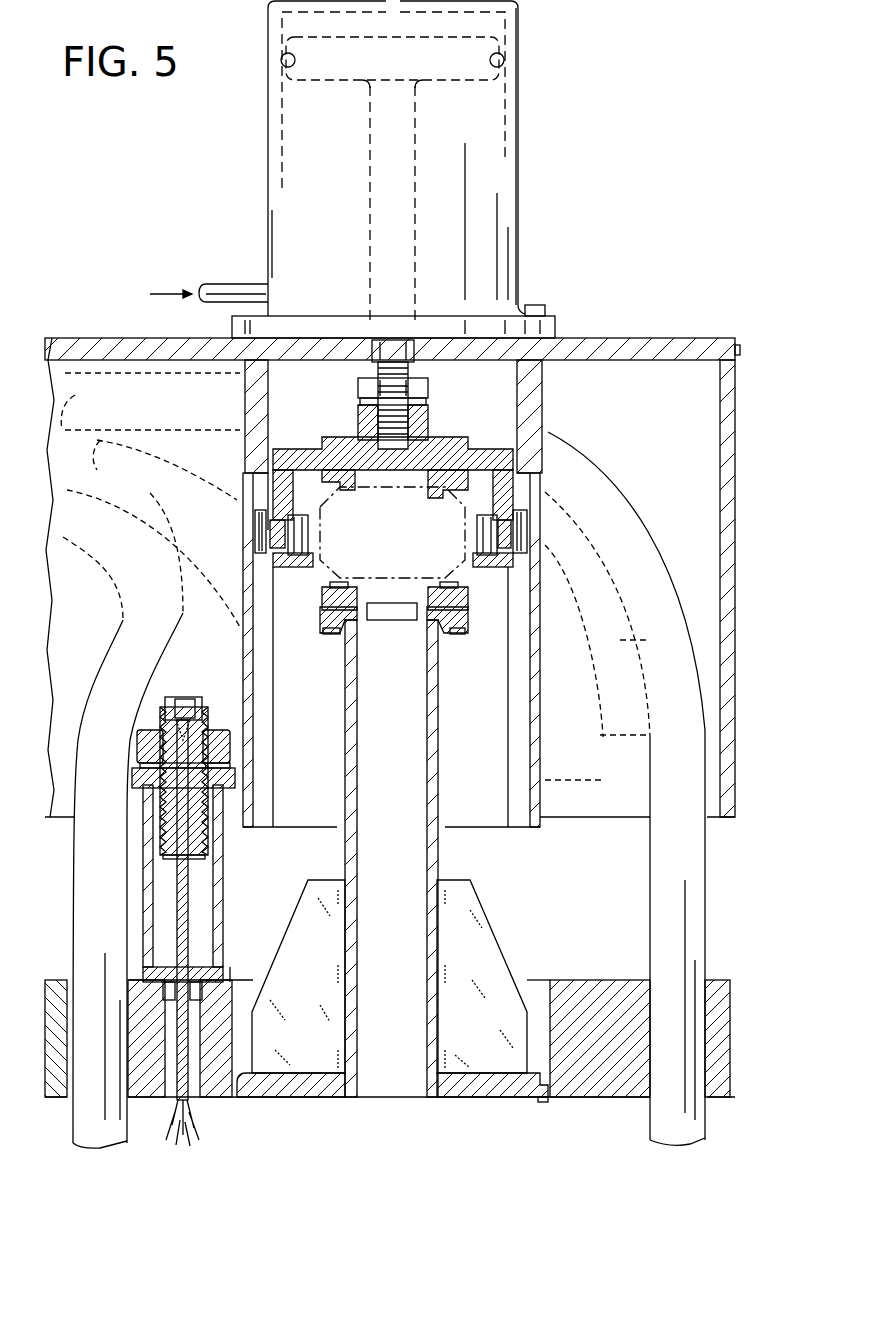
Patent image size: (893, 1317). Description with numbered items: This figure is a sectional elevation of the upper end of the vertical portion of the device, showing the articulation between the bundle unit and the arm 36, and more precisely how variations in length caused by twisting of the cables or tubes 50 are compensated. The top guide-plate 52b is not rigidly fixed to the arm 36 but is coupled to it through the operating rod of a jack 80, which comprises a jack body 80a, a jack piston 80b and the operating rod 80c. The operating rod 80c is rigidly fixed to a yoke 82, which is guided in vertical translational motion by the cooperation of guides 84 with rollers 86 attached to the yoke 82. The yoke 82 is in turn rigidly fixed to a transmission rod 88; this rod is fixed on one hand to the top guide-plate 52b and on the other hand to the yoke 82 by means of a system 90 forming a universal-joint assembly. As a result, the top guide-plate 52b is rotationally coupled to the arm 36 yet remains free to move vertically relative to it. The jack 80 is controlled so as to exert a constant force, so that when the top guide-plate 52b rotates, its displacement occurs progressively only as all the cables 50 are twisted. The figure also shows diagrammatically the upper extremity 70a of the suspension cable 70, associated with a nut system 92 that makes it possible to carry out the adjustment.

The arm 36 is at (722, 400).
The jack 80 is at (522, 238).
The jack body 80a is at (505, 108).
The jack piston 80b is at (468, 32).
The operating rod 80c is at (370, 193).
The yoke 82 is at (433, 452).
The rollers 86 is at (252, 500).
The universal-joint assembly system 90 is at (404, 556).
The transmission rod 88 is at (433, 690).
The guides 84 is at (262, 682).
The nut system 92 is at (233, 744).
The upper extremity of the suspension cable 70a is at (182, 708).
The suspension cable 70 is at (183, 1105).
The top guide-plate 52b is at (720, 1037).
The cables or tubes 50 is at (110, 911).